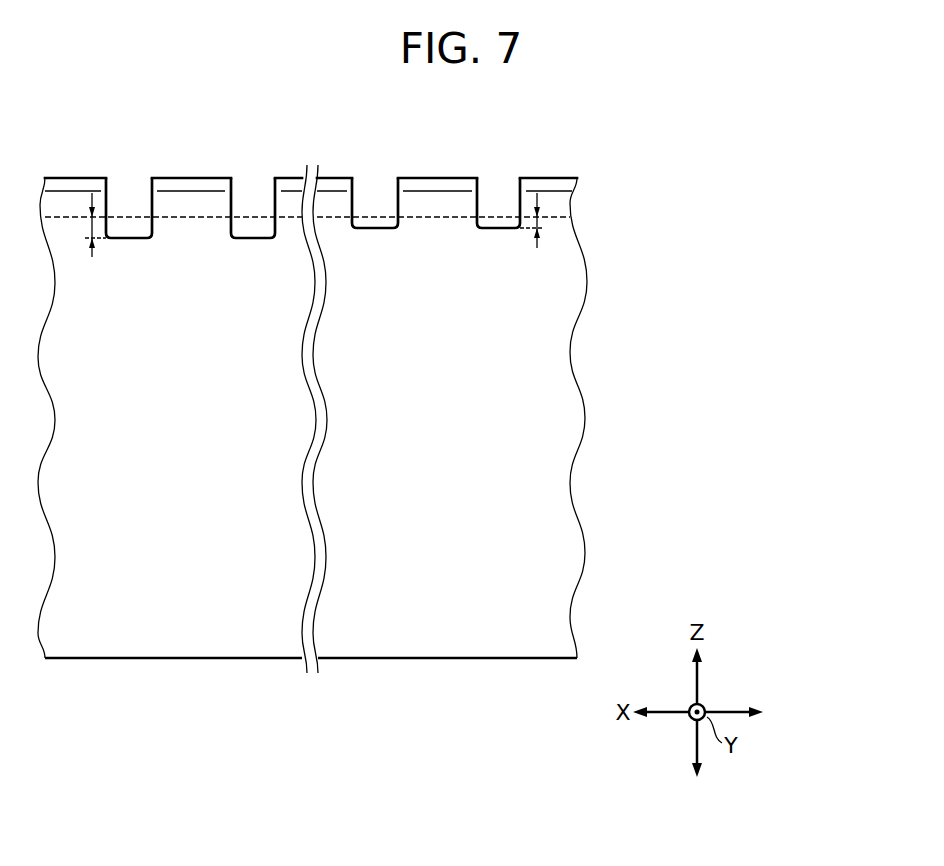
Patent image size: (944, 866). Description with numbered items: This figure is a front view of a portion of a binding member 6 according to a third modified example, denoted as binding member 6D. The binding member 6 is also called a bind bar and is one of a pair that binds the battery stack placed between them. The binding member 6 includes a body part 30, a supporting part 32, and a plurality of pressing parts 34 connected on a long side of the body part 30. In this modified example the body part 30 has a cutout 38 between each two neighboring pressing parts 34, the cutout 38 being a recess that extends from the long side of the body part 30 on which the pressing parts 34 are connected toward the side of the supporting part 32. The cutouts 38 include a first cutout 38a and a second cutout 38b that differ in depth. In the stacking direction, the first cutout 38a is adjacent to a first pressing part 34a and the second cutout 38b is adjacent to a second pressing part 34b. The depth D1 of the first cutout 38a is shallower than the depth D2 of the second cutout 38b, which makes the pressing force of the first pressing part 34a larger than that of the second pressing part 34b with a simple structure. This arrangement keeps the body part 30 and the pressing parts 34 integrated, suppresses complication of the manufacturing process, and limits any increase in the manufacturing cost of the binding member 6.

The binding member 6 is at (349, 458).
The binding member according to the third modified example 6D is at (349, 458).
The body part 30 is at (349, 425).
The supporting part 32 is at (490, 660).
The pressing part 34 is at (315, 140).
The first pressing part 34a is at (433, 178).
The second pressing part 34b is at (72, 178).
The cutout 38 is at (318, 268).
The first cutout 38a is at (378, 230).
The second cutout 38b is at (130, 240).
The depth of first cutout D1 is at (539, 222).
The depth of second cutout D2 is at (88, 226).